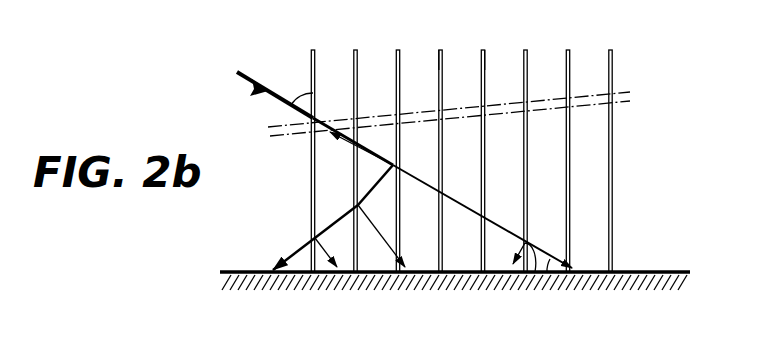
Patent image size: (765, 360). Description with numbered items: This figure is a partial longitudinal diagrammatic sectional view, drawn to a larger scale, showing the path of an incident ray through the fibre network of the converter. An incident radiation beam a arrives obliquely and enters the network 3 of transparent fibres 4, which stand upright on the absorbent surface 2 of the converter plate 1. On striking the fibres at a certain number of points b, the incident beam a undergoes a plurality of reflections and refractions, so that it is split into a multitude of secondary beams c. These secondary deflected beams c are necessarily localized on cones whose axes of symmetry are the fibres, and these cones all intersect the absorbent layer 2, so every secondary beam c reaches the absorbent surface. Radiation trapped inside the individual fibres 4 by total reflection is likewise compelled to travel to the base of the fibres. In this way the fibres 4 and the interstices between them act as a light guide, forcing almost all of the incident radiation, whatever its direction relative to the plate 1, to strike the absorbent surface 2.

The converter plate 1 is at (660, 287).
The absorbent surface 2 is at (630, 271).
The network of transparent fibres 3 is at (618, 172).
The transparent fibres 4 is at (483, 50).
The incident radiation beam a is at (244, 75).
The points of reflection and refraction b is at (392, 166).
The secondary deflected beams c is at (544, 274).